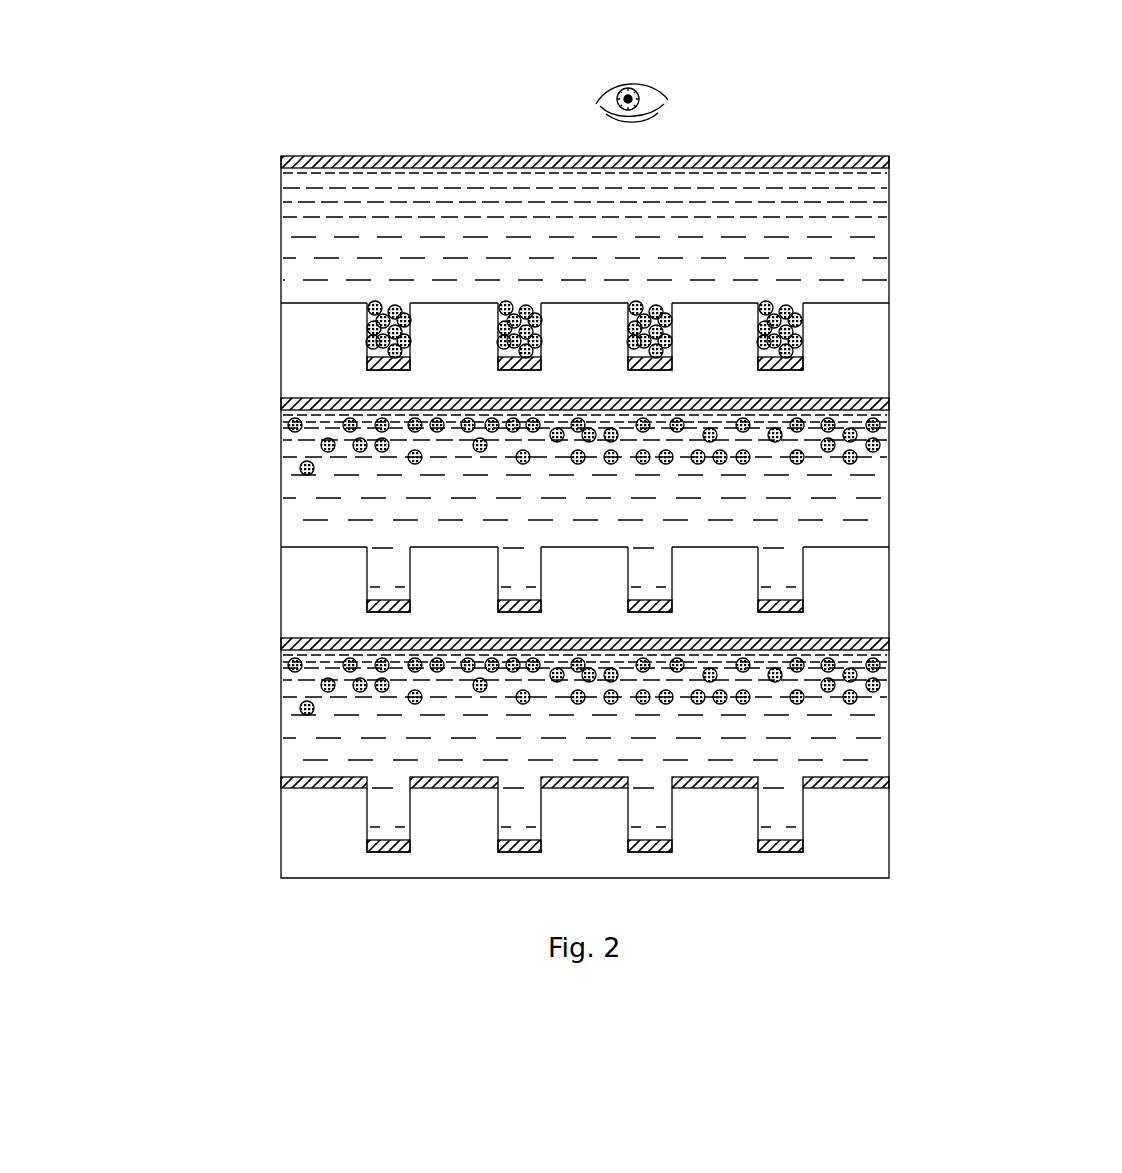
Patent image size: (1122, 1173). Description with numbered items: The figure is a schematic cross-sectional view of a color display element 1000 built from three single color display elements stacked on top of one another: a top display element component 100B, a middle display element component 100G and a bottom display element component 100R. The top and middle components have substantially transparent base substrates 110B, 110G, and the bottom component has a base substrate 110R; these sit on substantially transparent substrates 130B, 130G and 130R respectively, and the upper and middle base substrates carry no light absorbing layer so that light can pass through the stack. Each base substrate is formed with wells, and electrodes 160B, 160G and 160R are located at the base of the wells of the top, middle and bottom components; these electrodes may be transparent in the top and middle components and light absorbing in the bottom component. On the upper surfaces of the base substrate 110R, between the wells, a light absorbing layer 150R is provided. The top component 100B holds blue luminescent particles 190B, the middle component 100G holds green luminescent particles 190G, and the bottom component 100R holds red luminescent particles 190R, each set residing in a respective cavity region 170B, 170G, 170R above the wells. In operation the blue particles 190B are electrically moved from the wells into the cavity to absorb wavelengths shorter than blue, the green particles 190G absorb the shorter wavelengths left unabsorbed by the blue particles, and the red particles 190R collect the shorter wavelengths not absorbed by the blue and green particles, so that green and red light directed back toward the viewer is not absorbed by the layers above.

The color display element 1000 is at (165, 214).
The top display element component 100B is at (943, 193).
The middle display element component 100G is at (958, 490).
The bottom display element component 100R is at (922, 717).
The base substrate 110B is at (889, 375).
The base substrate 110G is at (885, 627).
The base substrate 110R is at (885, 862).
The substrate 130B is at (780, 153).
The substrate 130G is at (830, 398).
The substrate 130R is at (830, 638).
The light absorbing layer 150R is at (889, 777).
The electrode 160B is at (805, 362).
The electrode 160G is at (805, 603).
The electrode 160R is at (803, 843).
The blue layer fluid 170B is at (883, 153).
The green layer fluid 170G is at (889, 405).
The red layer fluid 170R is at (889, 645).
The blue luminescent particles 190B is at (395, 305).
The green luminescent particles 190G is at (307, 467).
The red luminescent particles 190R is at (380, 685).